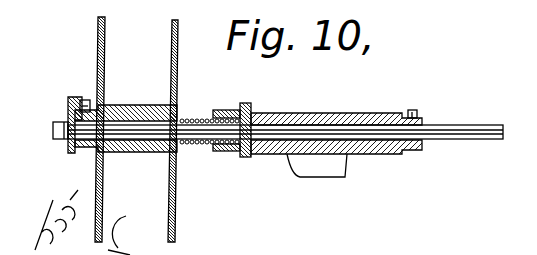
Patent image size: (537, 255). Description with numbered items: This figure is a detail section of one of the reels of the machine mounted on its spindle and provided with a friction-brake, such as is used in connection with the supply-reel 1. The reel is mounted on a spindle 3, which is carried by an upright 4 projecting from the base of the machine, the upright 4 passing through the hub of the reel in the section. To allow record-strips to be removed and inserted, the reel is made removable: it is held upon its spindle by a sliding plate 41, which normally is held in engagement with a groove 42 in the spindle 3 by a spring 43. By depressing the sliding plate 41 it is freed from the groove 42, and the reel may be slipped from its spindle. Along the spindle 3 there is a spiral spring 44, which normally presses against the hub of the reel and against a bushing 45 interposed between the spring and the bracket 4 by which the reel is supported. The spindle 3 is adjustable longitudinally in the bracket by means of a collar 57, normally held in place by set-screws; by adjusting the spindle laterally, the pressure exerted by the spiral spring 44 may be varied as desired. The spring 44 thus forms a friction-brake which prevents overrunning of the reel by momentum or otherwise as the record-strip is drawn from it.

The supply-reel 1 is at (184, 40).
The spindle 3 is at (476, 131).
The upright 4 is at (331, 113).
The sliding plate 41 is at (72, 97).
The groove 42 is at (70, 134).
The spring 43 is at (90, 100).
The spiral spring 44 is at (192, 118).
The bushing 45 is at (250, 110).
The collar 57 is at (421, 122).